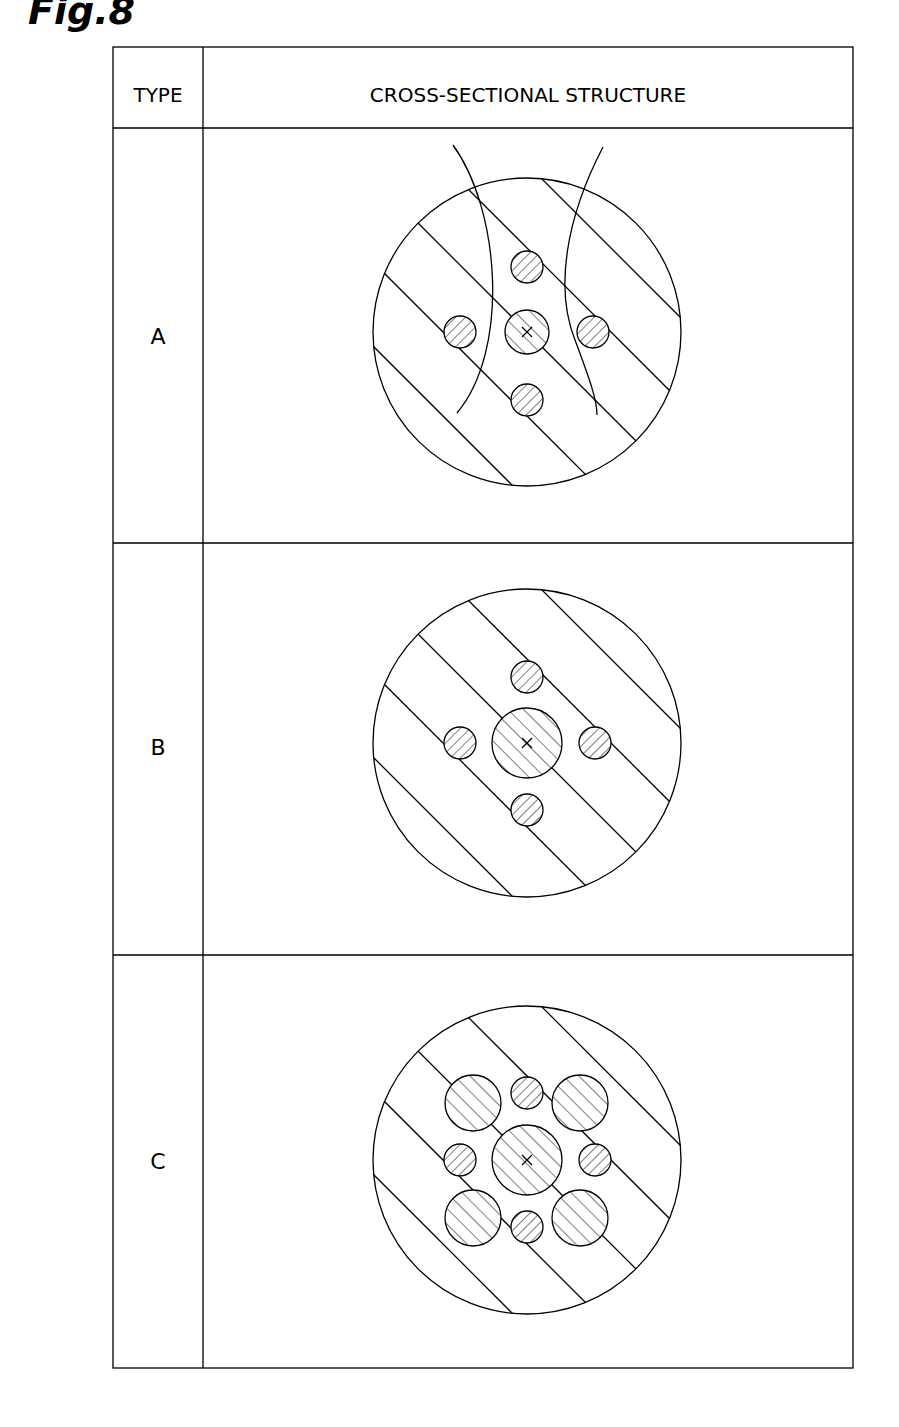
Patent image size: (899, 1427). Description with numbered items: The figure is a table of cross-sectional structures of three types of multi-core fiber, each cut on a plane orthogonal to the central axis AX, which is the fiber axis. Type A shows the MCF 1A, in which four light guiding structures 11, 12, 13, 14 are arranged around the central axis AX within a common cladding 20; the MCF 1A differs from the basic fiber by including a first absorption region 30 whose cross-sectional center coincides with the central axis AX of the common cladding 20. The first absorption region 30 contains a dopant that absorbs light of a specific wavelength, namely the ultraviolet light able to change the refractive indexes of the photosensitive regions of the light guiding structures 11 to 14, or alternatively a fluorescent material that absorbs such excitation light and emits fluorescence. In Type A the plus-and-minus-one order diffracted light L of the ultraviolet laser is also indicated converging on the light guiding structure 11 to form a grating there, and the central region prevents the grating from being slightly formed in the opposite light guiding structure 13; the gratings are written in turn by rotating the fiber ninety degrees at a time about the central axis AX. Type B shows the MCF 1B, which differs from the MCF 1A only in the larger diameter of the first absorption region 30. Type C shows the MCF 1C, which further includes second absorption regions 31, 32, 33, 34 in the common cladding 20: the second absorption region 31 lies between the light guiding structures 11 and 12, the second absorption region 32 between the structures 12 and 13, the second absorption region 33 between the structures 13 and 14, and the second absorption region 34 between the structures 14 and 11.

The light guiding structure 11 is at (525, 1077).
The light guiding structure 12 is at (605, 1150).
The light guiding structure 13 is at (531, 1244).
The light guiding structure 14 is at (443, 1163).
The common cladding 20 is at (670, 1161).
The first absorption region 30 is at (697, 1212).
The second absorption region 31 is at (583, 1077).
The second absorption region 32 is at (587, 1240).
The second absorption region 33 is at (458, 1236).
The second absorption region 34 is at (463, 1090).
The central axis AX is at (527, 1160).
The ±1 order diffracted light L is at (565, 167).
The MCF 1A is at (660, 211).
The MCF 1B is at (660, 621).
The MCF 1C is at (660, 1041).